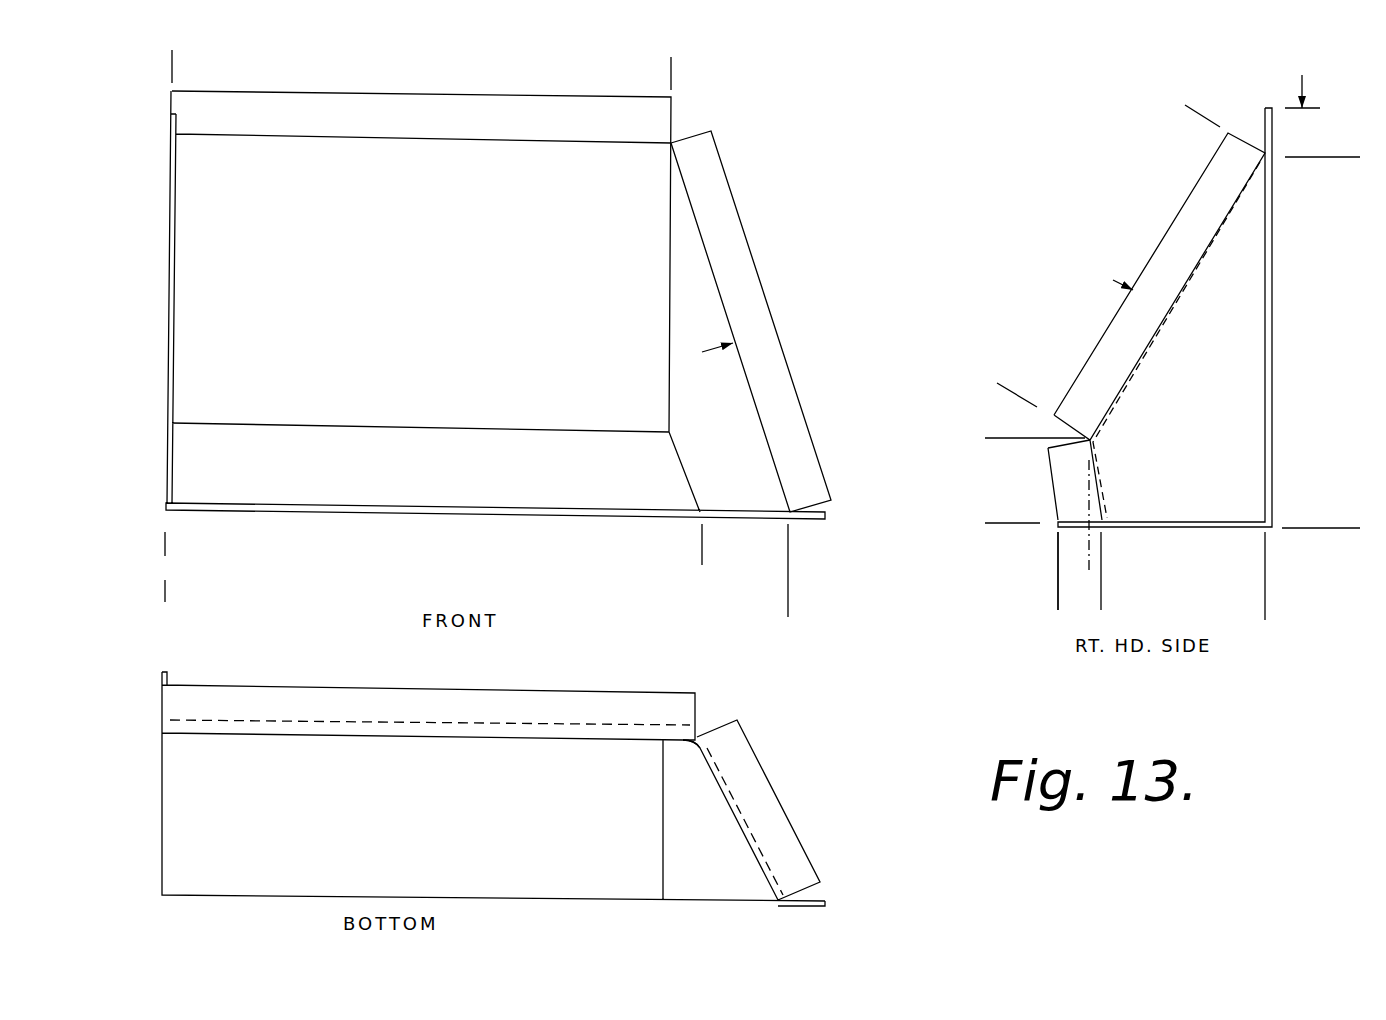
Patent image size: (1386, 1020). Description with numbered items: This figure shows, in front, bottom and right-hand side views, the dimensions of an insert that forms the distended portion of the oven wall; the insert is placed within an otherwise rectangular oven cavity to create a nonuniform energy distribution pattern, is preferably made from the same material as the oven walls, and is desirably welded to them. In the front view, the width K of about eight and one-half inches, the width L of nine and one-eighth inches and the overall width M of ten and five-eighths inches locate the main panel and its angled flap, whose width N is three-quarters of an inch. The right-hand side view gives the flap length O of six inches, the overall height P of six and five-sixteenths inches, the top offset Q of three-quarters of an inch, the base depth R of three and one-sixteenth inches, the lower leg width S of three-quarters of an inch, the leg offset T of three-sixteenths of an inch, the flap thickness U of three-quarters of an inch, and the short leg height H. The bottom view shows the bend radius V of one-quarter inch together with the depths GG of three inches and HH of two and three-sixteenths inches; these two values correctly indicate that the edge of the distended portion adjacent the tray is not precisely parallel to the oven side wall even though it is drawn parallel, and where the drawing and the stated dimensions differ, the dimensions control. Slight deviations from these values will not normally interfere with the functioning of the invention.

The front-view width dimension K is at (671, 68).
The front-view width dimension L is at (165, 544).
The front-view overall width dimension M is at (165, 590).
The front-view flap width dimension N is at (778, 325).
The bottom-view depth dimension GG is at (219, 733).
The bottom-view depth dimension HH is at (592, 740).
The bend radius V is at (692, 746).
The right-hand side view length dimension O is at (1188, 110).
The right-hand side view thickness dimension U is at (1168, 313).
The right-hand side view offset dimension Q is at (1302, 157).
The right-hand side view height dimension P is at (1342, 157).
The right-hand side view height dimension H is at (996, 438).
The right-hand side view offset dimension T is at (1063, 555).
The right-hand side view width dimension S is at (1058, 597).
The right-hand side view depth dimension R is at (1265, 598).